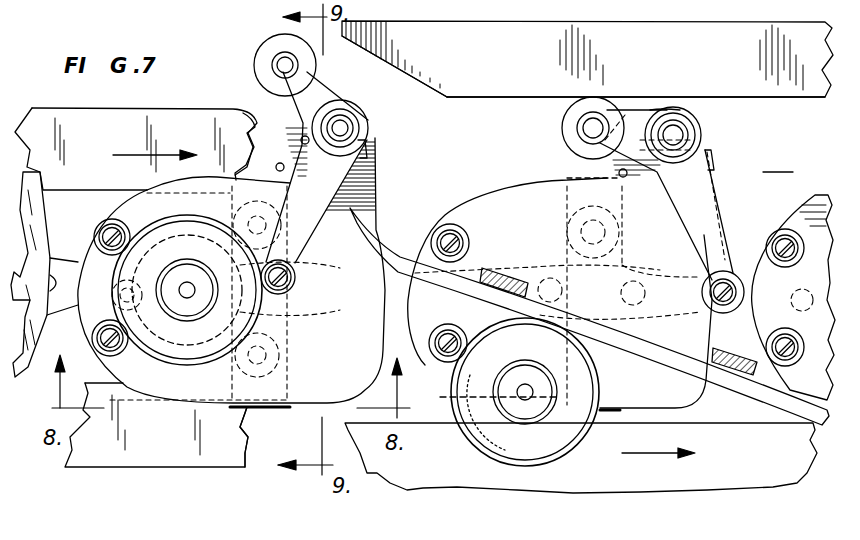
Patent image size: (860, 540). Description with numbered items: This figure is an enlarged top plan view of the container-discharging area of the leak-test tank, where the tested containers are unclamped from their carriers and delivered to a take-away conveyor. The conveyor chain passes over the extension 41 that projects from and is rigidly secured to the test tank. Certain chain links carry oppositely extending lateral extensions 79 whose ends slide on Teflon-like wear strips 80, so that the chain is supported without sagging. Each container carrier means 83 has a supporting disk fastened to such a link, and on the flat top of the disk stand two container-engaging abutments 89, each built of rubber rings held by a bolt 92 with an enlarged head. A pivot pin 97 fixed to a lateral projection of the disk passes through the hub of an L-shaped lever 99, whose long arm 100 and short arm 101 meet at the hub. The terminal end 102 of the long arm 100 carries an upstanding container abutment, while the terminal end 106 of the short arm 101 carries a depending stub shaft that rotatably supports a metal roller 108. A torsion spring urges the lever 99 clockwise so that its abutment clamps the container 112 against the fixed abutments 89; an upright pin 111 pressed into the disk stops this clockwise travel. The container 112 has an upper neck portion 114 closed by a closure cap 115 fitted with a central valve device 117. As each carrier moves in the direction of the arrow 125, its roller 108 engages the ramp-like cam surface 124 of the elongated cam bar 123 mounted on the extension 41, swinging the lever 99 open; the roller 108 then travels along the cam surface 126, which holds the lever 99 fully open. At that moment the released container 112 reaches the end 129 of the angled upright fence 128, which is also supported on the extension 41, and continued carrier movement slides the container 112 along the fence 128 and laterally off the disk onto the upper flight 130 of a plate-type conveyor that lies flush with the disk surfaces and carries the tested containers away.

The extension 41 is at (778, 161).
The lateral extension 79 is at (242, 148).
The wear strip 80 is at (203, 453).
The container carrier means 83 is at (688, 415).
The container-engaging abutment 89 is at (97, 216).
The bolt 92 is at (100, 233).
The pivot pin 97 is at (687, 135).
The lever 99 is at (697, 115).
The arm 100 is at (707, 223).
The arm 101 is at (637, 118).
The terminal end 102 is at (725, 268).
The terminal end 106 is at (307, 72).
The roller 108 is at (263, 47).
The pin 111 is at (302, 138).
The container 112 is at (554, 464).
The neck portion 114 is at (488, 443).
The closure cap 115 is at (523, 412).
The valve device 117 is at (517, 392).
The cam bar 123 is at (632, 33).
The cam surface 124 is at (403, 75).
The arrow 125 is at (163, 153).
The cam surface 126 is at (513, 98).
The fence 128 is at (718, 370).
The end 129 is at (380, 210).
The upper flight 130 is at (760, 480).